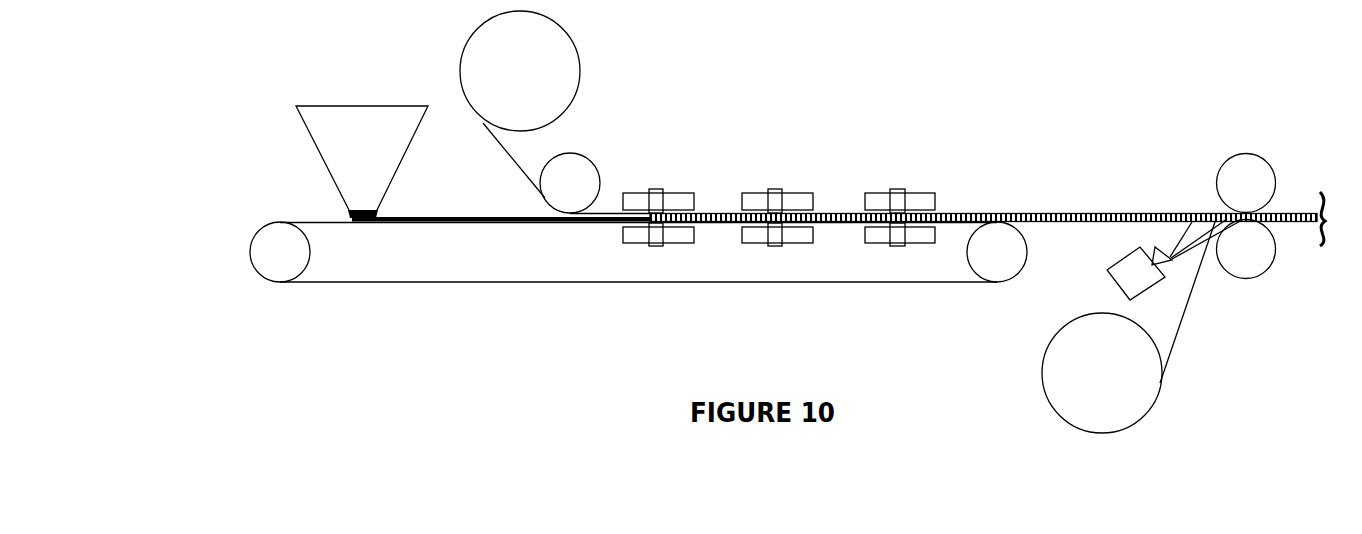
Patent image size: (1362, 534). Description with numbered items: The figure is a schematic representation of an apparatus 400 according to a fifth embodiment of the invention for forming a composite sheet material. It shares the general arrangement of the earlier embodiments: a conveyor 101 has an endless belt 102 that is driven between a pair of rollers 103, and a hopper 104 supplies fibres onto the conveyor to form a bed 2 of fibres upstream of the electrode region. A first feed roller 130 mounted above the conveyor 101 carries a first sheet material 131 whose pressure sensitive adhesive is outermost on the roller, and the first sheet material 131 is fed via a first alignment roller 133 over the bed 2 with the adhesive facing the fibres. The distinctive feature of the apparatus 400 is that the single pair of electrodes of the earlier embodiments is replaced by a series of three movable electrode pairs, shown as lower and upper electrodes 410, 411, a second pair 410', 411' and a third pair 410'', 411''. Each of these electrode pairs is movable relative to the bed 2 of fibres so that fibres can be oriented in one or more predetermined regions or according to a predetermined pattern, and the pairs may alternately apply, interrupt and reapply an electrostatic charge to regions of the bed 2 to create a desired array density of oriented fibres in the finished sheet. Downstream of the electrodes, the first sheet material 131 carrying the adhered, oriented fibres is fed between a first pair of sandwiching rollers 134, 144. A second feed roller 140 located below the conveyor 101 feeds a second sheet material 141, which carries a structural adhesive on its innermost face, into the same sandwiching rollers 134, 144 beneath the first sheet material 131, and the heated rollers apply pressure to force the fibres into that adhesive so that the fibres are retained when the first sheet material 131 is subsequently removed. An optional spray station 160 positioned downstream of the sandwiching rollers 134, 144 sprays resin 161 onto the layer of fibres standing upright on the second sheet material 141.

The apparatus 400 is at (222, 48).
The conveyor 101 is at (324, 346).
The endless belt 102 is at (512, 283).
The rollers 103 is at (268, 258).
The hopper 104 is at (387, 166).
The bed 2 is at (433, 218).
The first feed roller 130 is at (542, 85).
The first sheet material 131 is at (507, 147).
The first alignment roller 133 is at (558, 192).
The electrode 411 is at (665, 172).
The electrode 410 is at (631, 249).
The electrode 411' is at (786, 172).
The electrode 410' is at (748, 249).
The electrode 411'' is at (915, 172).
The electrode 410'' is at (869, 251).
The sandwiching roller 134 is at (1257, 183).
The sandwiching roller 144 is at (1257, 250).
The spray station 160 is at (1122, 277).
The resin 161 is at (1180, 229).
The second feed roller 140 is at (1123, 378).
The second sheet material 141 is at (1185, 302).